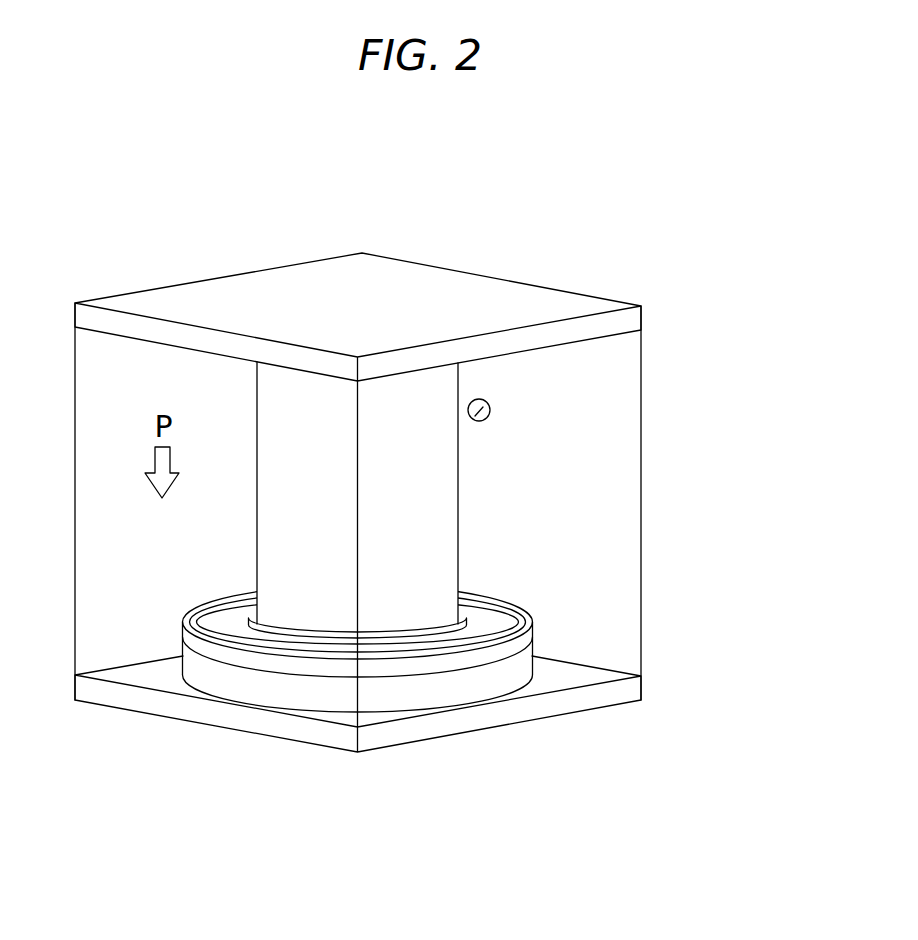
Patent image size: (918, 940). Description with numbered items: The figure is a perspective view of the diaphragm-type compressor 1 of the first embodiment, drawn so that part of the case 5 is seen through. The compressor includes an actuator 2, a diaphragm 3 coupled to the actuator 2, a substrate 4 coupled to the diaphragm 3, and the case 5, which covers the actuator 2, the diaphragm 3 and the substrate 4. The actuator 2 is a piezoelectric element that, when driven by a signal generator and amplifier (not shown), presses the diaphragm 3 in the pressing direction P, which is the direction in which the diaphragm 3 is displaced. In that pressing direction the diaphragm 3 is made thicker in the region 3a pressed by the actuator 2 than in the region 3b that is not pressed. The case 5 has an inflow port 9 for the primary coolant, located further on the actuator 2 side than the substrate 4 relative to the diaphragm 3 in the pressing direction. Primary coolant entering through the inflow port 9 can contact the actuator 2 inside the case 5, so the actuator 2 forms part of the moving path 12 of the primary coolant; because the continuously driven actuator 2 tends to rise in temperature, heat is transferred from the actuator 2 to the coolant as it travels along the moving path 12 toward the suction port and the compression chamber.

The diaphragm-type compressor 1 is at (709, 213).
The actuator 2 is at (412, 407).
The diaphragm 3 is at (523, 638).
The region pressed by the actuator 3a is at (283, 638).
The region not pressed by the actuator 3b is at (477, 632).
The substrate 4 is at (517, 668).
The case 5 is at (190, 295).
The inflow port 9 is at (474, 420).
The moving path 12 is at (483, 477).